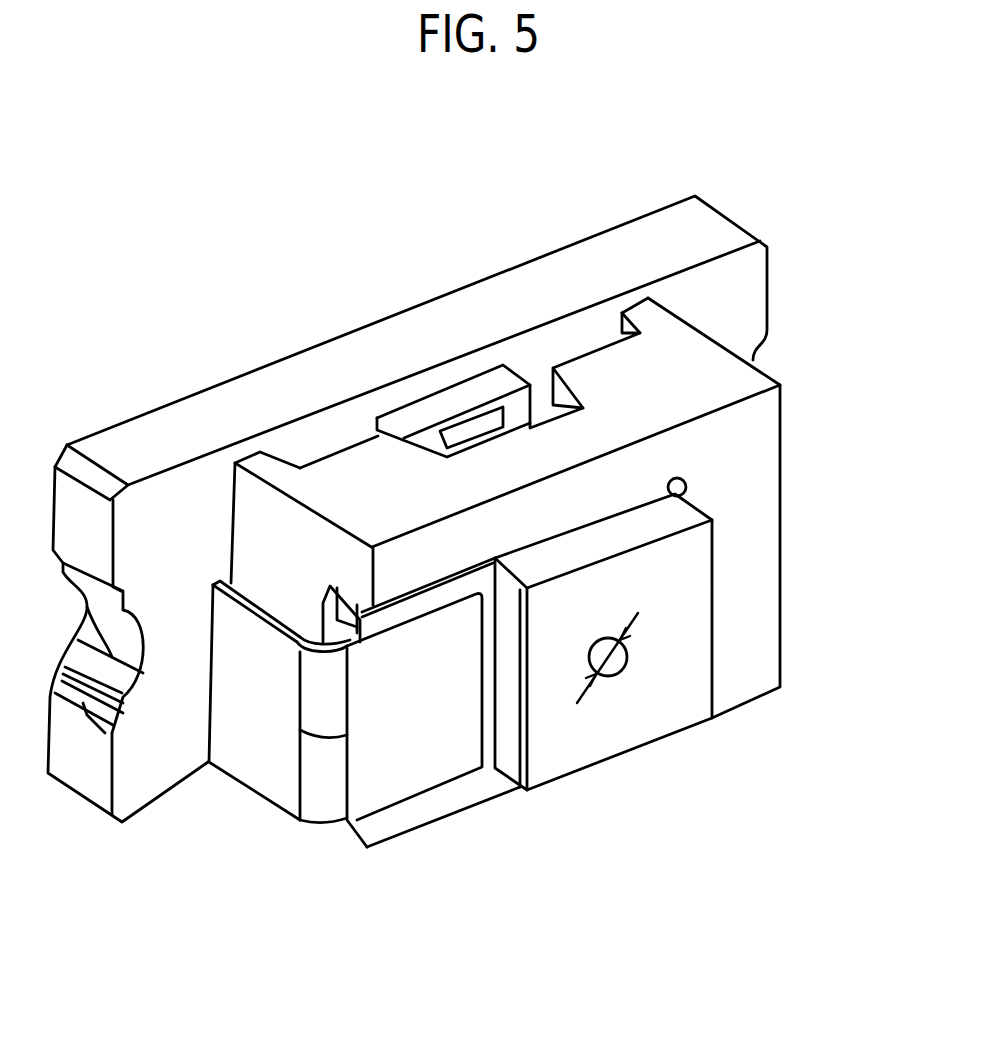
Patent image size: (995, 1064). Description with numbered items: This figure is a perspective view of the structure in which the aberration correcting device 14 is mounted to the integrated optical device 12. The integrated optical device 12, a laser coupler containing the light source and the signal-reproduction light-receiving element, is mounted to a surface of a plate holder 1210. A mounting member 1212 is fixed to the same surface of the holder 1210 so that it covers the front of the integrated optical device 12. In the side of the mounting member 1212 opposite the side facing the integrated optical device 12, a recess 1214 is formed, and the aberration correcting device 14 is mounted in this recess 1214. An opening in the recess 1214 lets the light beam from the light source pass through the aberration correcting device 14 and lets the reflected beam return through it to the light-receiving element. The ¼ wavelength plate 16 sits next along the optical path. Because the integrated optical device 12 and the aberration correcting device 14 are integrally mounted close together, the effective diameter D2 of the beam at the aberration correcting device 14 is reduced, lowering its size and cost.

The plate holder 1210 is at (585, 267).
The mounting member 1212 is at (683, 360).
The integrated optical device 12 is at (458, 398).
The recess 1214 is at (322, 607).
The aberration correcting device 14 is at (505, 760).
The ¼ wavelength plate 16 is at (668, 653).
The effective diameter D2 is at (612, 657).